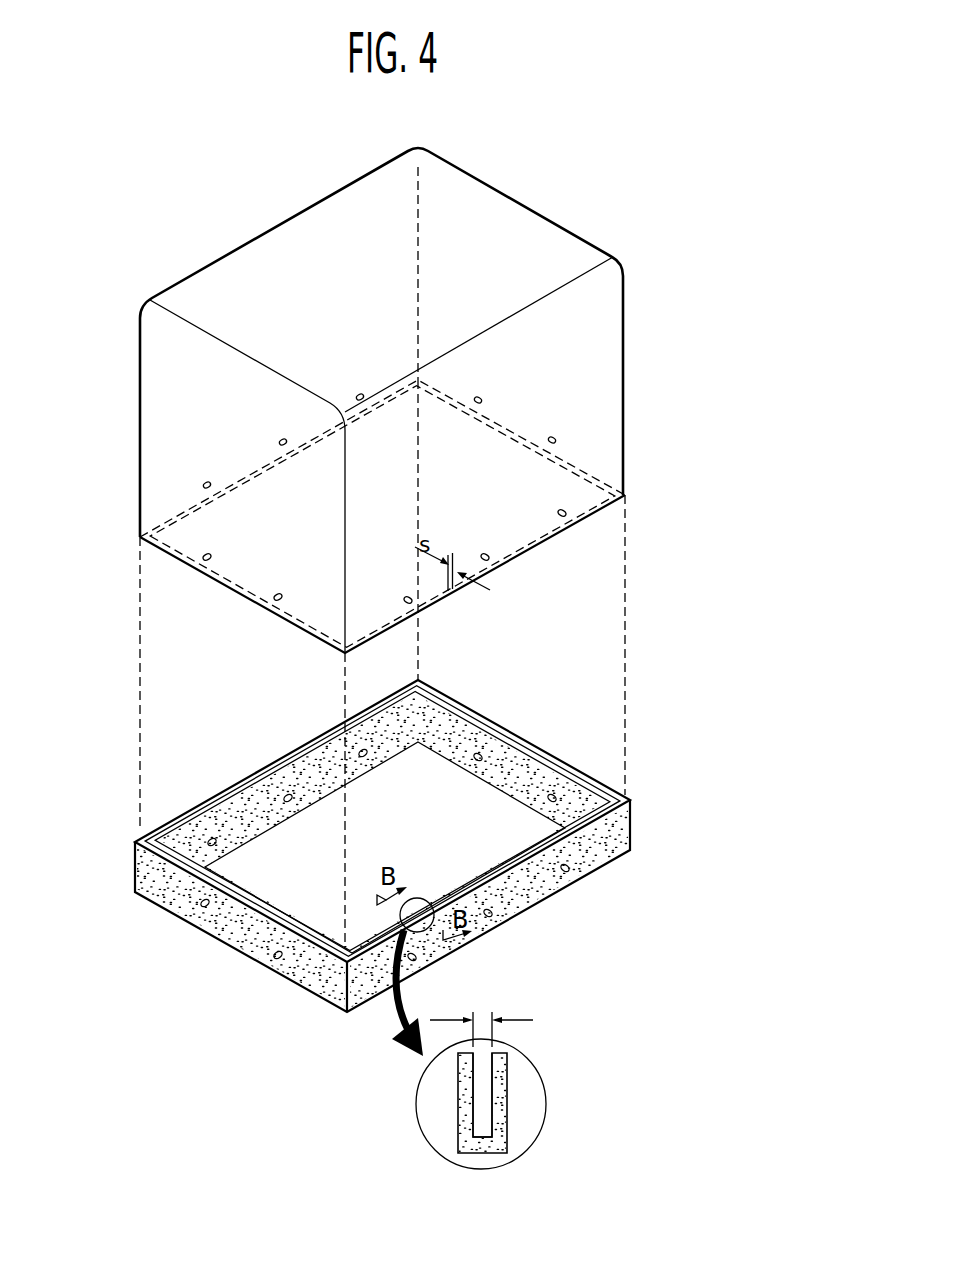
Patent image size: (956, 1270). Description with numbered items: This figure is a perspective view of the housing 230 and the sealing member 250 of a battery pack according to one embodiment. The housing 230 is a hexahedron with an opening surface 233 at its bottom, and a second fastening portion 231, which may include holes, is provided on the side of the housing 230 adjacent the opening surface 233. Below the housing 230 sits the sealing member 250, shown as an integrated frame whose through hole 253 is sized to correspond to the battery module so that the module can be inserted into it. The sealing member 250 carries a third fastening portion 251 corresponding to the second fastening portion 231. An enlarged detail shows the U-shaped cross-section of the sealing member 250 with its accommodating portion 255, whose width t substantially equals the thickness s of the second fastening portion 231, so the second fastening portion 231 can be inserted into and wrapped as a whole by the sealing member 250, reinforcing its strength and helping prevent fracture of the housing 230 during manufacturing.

The housing 230 is at (562, 185).
The second fastening portion 231 is at (274, 597).
The opening surface 233 is at (383, 505).
The sealing member 250 is at (132, 825).
The third fastening portion 251 is at (274, 955).
The through hole 253 is at (495, 814).
The accommodating portion 255 is at (484, 1108).